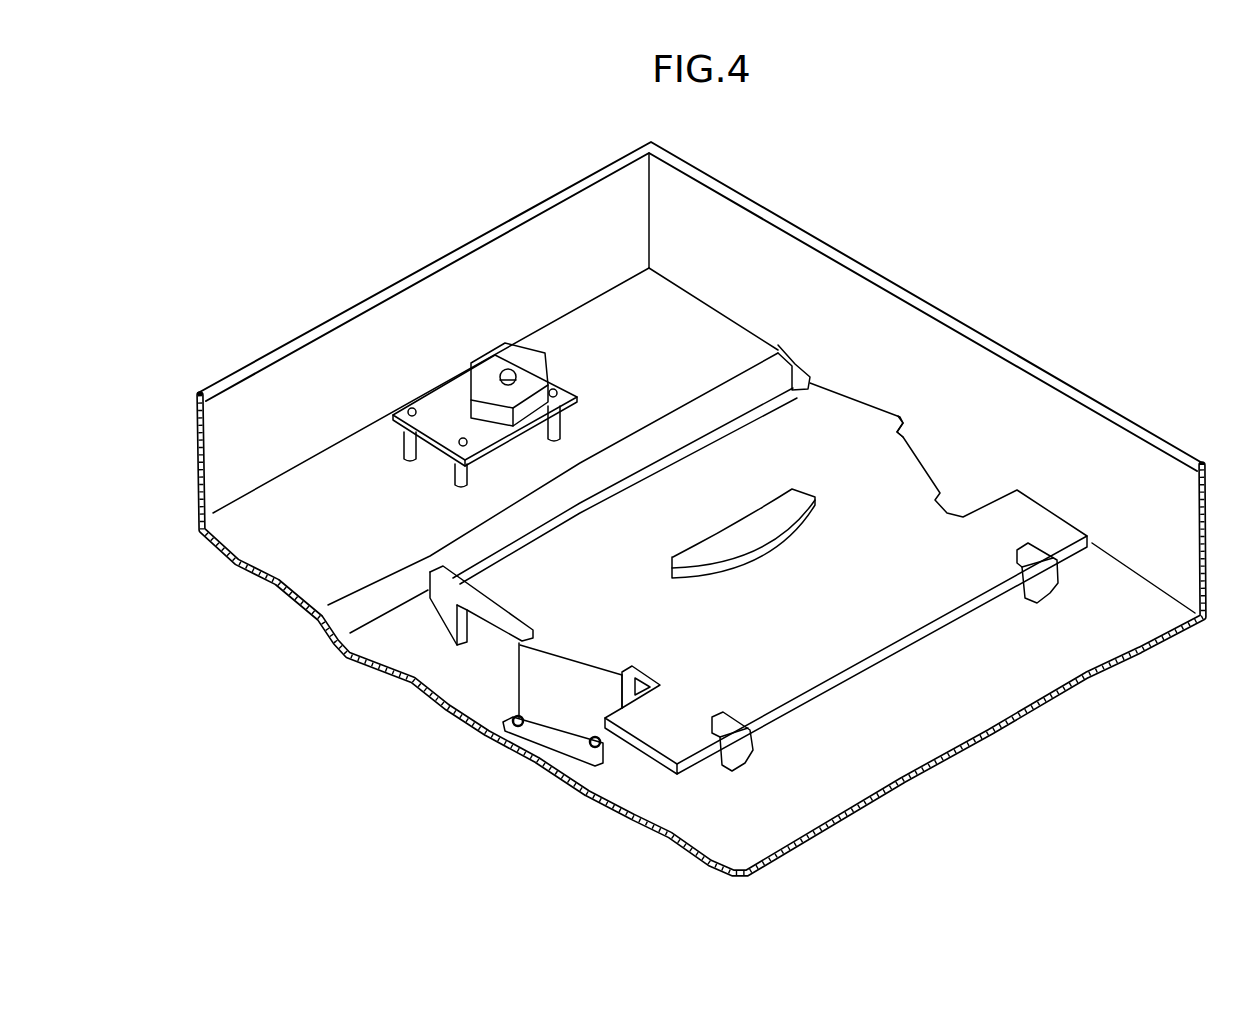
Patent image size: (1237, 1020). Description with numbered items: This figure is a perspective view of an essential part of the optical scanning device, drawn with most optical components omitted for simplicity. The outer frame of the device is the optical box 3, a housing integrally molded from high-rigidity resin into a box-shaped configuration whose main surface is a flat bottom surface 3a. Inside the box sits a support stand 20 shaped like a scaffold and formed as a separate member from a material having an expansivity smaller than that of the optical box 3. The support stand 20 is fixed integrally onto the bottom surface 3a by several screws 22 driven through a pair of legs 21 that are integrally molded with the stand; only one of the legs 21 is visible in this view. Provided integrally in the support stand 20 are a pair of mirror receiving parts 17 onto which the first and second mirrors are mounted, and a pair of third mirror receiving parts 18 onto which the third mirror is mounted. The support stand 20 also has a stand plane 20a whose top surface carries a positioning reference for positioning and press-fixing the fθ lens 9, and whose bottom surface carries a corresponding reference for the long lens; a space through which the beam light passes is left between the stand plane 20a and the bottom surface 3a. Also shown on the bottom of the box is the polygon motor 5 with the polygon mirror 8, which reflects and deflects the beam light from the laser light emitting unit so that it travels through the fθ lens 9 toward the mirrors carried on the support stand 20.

The optical box 3 is at (588, 168).
The bottom surface 3a is at (877, 783).
The polygon motor 5 is at (440, 372).
The polygon mirror 8 is at (500, 352).
The fθ lens 9 is at (798, 493).
The mirror receiving parts 17 is at (735, 747).
The third mirror receiving parts 18 is at (798, 375).
The support stand 20 is at (935, 470).
The stand plane 20a is at (866, 412).
The legs 21 is at (527, 695).
The screws 22 is at (590, 746).